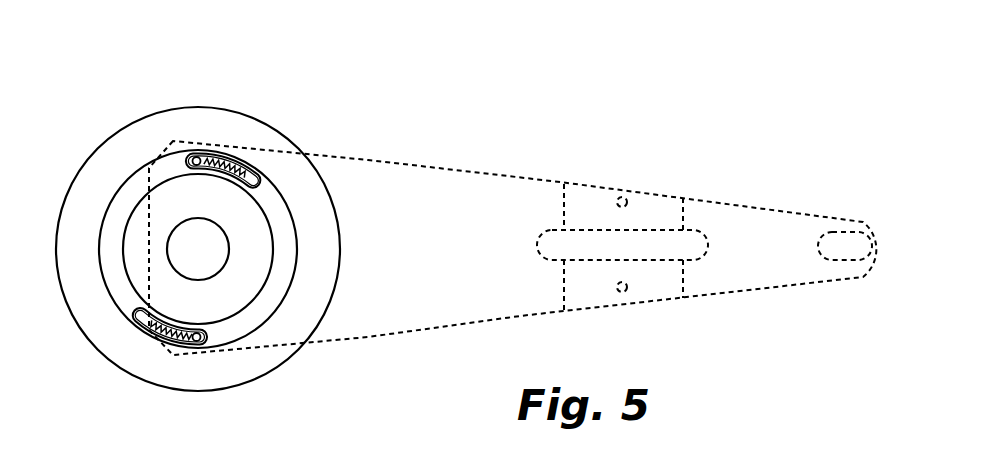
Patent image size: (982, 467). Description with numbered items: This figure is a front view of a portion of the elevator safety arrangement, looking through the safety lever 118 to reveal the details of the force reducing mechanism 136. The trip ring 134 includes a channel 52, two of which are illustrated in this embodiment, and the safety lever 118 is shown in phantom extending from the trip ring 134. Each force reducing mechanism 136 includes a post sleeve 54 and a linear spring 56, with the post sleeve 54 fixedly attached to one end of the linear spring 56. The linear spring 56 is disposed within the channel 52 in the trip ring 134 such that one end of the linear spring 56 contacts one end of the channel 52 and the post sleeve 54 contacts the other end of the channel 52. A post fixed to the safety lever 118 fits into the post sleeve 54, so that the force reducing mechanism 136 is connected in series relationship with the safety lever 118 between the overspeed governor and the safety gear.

The trip ring 134 is at (150, 113).
The safety lever 118 is at (480, 171).
The channel 52 is at (264, 176).
The post sleeve 54 is at (198, 157).
The linear spring 56 is at (247, 169).
The force reducing mechanism 136 is at (232, 158).